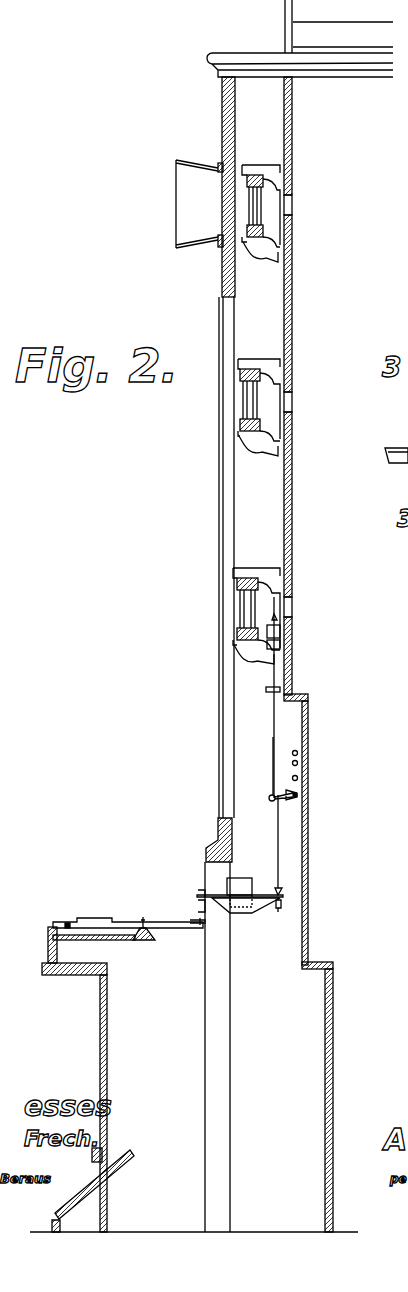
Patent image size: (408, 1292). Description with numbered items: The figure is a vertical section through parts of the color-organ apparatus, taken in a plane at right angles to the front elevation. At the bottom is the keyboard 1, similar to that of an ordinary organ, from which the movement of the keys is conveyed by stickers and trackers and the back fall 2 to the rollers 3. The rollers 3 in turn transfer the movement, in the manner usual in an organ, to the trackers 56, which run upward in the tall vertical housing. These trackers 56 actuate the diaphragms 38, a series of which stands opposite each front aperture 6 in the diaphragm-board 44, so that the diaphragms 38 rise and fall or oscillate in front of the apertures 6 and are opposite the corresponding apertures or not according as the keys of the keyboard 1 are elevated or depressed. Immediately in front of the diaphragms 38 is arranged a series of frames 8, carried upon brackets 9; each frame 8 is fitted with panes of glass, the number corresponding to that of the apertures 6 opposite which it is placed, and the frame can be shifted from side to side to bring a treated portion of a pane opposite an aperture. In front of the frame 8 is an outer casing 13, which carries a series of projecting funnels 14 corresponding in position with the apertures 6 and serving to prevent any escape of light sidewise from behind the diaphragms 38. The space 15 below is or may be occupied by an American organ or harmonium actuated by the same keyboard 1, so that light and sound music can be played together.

The keyboard 1 is at (92, 925).
The back fall 2 is at (240, 905).
The rollers 3 is at (283, 806).
The front aperture 6 is at (292, 201).
The frame 8 is at (249, 240).
The bracket 9 is at (276, 265).
The outer casing 13 is at (222, 137).
The funnel 14 is at (187, 236).
The space 15 is at (194, 1079).
The diaphragm 38 is at (262, 592).
The diaphragm-board 44 is at (292, 310).
The tracker 56 is at (273, 737).